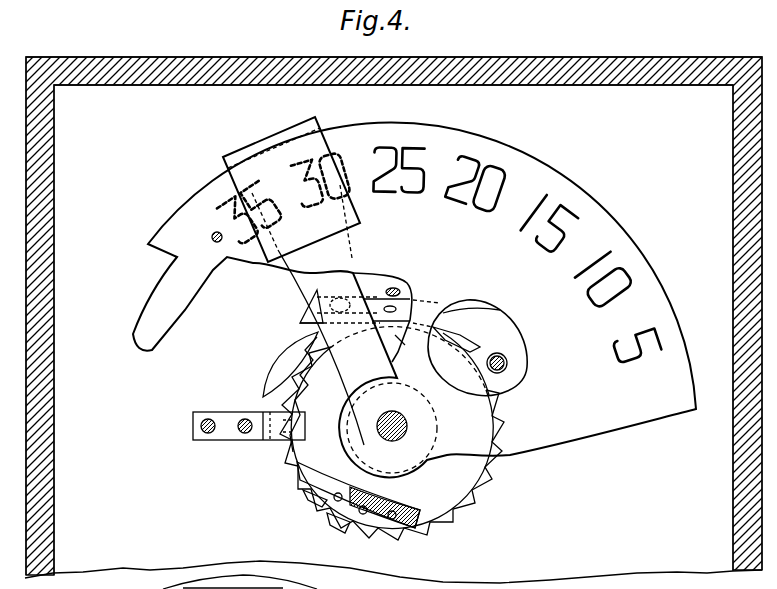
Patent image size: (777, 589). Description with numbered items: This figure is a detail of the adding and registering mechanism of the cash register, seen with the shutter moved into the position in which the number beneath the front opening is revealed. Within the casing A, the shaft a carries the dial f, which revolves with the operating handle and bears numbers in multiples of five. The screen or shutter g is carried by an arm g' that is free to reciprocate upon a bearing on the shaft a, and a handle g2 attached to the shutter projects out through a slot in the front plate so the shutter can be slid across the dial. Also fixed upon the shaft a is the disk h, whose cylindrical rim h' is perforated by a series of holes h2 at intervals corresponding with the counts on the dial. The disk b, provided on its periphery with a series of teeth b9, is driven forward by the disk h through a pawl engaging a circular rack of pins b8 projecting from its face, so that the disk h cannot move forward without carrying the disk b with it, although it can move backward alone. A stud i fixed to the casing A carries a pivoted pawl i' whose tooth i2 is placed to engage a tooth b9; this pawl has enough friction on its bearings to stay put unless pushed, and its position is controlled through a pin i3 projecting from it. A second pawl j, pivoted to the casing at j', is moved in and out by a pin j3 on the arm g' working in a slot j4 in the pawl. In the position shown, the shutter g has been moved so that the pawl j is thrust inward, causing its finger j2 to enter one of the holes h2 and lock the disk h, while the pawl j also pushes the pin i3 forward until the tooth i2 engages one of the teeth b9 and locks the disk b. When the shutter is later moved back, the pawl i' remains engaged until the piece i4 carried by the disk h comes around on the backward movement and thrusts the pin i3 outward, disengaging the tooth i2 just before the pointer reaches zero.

The casing A is at (393, 323).
The dial f is at (414, 300).
The screen or shutter g is at (291, 189).
The handle g2 is at (219, 243).
The arm g' is at (348, 323).
The disk h is at (308, 319).
The shaft a is at (406, 431).
The disk b is at (385, 512).
The teeth b9 is at (448, 514).
The pins b8 is at (338, 493).
The cylindrical rim h' is at (306, 510).
The holes h2 is at (358, 523).
The pin i3 is at (307, 323).
The pawl i' is at (290, 364).
The tooth i2 is at (308, 352).
The stud i is at (403, 289).
The piece i4 is at (478, 347).
The pivot j' is at (484, 348).
The pawl j is at (302, 306).
The slot j4 is at (377, 290).
The pin j3 is at (350, 272).
The finger j2 is at (403, 340).